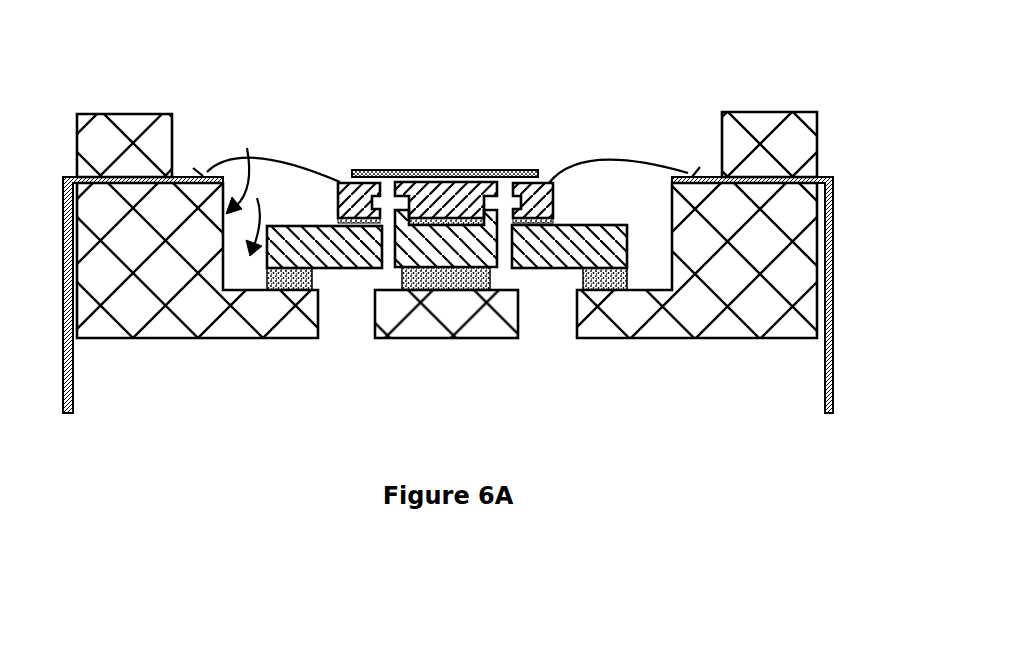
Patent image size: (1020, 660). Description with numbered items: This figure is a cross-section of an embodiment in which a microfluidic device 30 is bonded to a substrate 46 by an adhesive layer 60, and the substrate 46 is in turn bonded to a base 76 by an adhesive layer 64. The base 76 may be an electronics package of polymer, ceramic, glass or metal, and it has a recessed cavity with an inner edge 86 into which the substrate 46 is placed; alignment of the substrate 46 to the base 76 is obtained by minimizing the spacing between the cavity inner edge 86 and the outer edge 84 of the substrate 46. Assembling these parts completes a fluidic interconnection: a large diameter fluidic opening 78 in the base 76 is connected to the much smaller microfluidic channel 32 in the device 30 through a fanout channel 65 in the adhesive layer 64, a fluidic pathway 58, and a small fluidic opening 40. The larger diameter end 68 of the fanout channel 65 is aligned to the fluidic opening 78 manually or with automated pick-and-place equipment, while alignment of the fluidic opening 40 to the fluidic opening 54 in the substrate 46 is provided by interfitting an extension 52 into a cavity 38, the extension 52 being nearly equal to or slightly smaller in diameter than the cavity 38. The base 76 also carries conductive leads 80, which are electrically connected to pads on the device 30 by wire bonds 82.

The microfluidic device 30 is at (541, 185).
The microfluidic channel 32 is at (413, 180).
The cavity 38 is at (516, 200).
The fluidic opening 40 is at (371, 170).
The substrate 46 is at (603, 227).
The extension 52 is at (487, 196).
The fluidic opening 54 is at (383, 218).
The fluidic pathway 58 is at (342, 182).
The adhesive layer 60 is at (550, 219).
The adhesive layer 64 is at (623, 266).
The fanout channel 65 is at (537, 278).
The larger diameter end 68 is at (565, 278).
The base 76 is at (762, 303).
The fluidic opening 78 is at (362, 330).
The conductive leads 80 is at (832, 175).
The wire bonds 82 is at (588, 163).
The outer edge 84 is at (274, 219).
The inner edge 86 is at (235, 166).